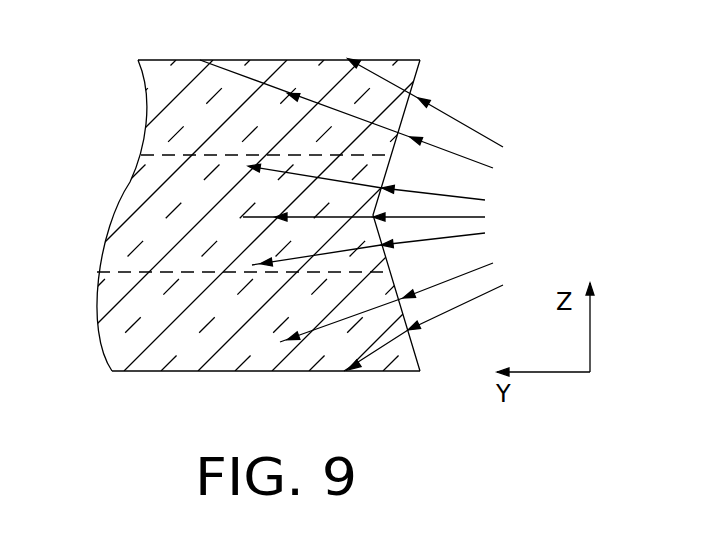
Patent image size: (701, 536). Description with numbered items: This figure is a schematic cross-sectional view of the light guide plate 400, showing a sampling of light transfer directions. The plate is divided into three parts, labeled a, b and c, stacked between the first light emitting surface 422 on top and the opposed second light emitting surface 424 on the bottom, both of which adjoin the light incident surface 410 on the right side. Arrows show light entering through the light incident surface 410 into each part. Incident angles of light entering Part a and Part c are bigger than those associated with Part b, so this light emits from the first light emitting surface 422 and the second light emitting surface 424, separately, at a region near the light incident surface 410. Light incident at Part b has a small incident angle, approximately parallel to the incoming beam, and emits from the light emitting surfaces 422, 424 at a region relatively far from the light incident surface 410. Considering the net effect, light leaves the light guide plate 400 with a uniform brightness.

The light guide plate 400 is at (176, 31).
The first light emitting surface 422 is at (312, 60).
The light incident surface 410 is at (420, 62).
The second light emitting surface 424 is at (287, 372).